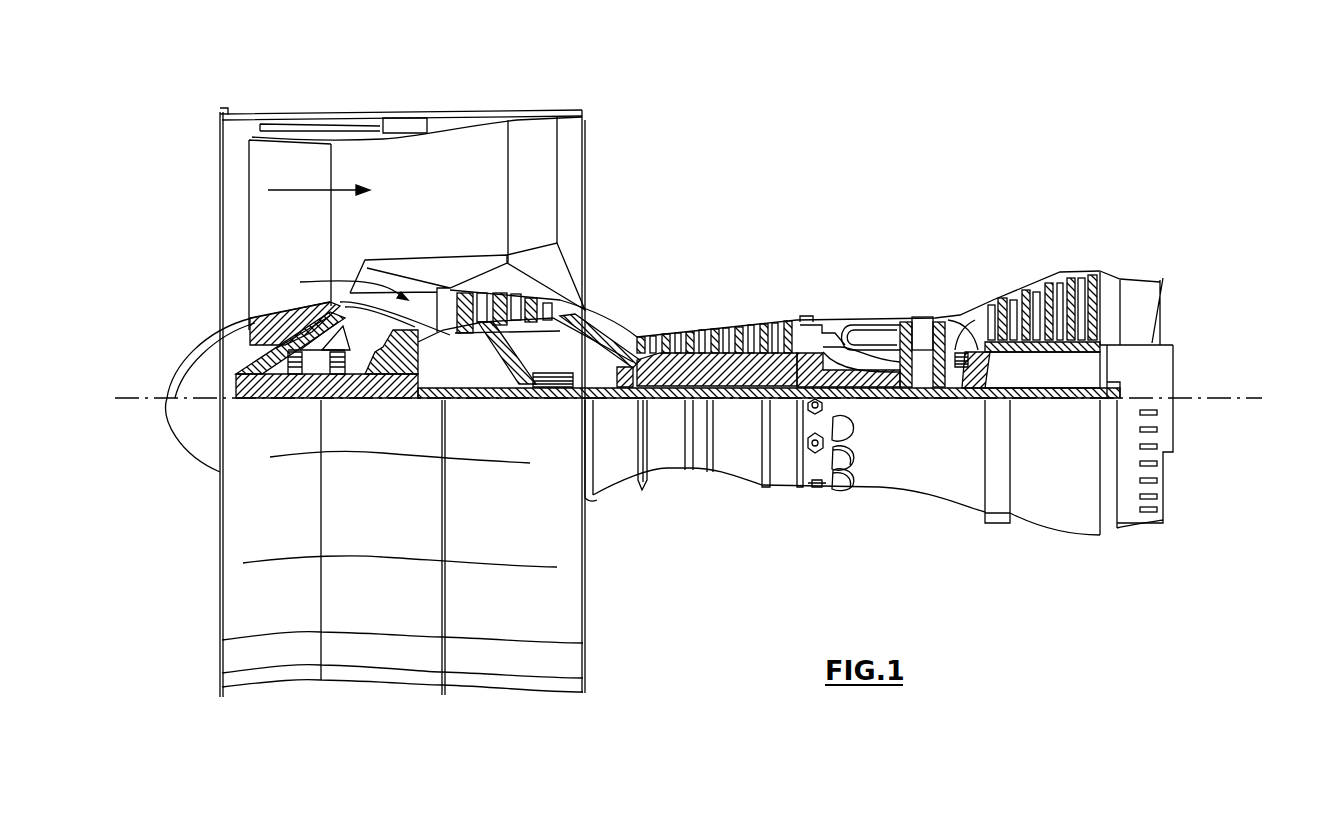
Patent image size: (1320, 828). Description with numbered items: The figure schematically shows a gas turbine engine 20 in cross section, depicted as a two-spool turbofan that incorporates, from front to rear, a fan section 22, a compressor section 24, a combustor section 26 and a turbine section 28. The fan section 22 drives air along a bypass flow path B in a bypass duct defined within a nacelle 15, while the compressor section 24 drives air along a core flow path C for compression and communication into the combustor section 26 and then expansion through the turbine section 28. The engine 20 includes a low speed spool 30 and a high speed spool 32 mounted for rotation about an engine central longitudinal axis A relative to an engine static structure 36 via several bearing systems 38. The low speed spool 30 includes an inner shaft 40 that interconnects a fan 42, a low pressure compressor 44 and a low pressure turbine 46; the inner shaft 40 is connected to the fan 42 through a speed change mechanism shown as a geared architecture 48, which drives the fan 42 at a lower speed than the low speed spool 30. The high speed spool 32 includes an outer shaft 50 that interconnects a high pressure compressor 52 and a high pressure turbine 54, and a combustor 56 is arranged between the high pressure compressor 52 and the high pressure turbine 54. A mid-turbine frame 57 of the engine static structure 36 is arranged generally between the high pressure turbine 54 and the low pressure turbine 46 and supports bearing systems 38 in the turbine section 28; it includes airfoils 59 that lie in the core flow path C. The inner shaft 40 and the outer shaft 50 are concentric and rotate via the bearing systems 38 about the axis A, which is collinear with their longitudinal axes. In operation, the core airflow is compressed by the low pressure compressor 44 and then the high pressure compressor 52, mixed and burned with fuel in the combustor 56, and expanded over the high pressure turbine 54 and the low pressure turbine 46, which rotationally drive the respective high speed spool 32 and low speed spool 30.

The gas turbine engine 20 is at (872, 157).
The fan section 22 is at (333, 103).
The nacelle 15 is at (402, 125).
The fan 42 is at (305, 243).
The bypass flow path B is at (306, 189).
The core flow path C is at (345, 283).
The low pressure compressor 44 is at (503, 307).
The compressor section 24 is at (634, 301).
The high pressure compressor 52 is at (712, 370).
The high speed spool 32 is at (782, 352).
The combustor section 26 is at (856, 285).
The combustor 56 is at (856, 340).
The high pressure turbine 54 is at (921, 318).
The mid-turbine frame 57 is at (968, 301).
The turbine section 28 is at (1004, 254).
The low pressure turbine 46 is at (1050, 282).
The airfoils 59 is at (987, 356).
The geared architecture 48 is at (404, 382).
The bearing systems 38 is at (538, 378).
The inner shaft 40 is at (603, 400).
The low speed spool 30 is at (741, 412).
The engine static structure 36 is at (780, 498).
The outer shaft 50 is at (870, 386).
The engine central longitudinal axis A is at (1252, 398).